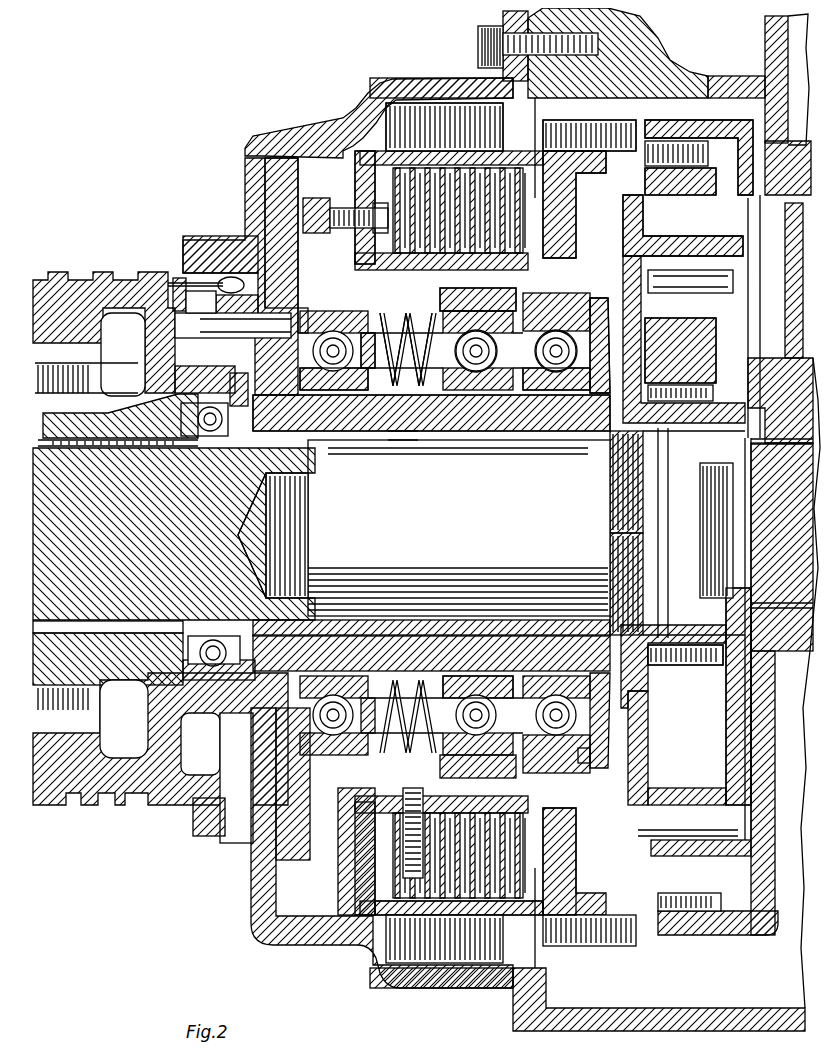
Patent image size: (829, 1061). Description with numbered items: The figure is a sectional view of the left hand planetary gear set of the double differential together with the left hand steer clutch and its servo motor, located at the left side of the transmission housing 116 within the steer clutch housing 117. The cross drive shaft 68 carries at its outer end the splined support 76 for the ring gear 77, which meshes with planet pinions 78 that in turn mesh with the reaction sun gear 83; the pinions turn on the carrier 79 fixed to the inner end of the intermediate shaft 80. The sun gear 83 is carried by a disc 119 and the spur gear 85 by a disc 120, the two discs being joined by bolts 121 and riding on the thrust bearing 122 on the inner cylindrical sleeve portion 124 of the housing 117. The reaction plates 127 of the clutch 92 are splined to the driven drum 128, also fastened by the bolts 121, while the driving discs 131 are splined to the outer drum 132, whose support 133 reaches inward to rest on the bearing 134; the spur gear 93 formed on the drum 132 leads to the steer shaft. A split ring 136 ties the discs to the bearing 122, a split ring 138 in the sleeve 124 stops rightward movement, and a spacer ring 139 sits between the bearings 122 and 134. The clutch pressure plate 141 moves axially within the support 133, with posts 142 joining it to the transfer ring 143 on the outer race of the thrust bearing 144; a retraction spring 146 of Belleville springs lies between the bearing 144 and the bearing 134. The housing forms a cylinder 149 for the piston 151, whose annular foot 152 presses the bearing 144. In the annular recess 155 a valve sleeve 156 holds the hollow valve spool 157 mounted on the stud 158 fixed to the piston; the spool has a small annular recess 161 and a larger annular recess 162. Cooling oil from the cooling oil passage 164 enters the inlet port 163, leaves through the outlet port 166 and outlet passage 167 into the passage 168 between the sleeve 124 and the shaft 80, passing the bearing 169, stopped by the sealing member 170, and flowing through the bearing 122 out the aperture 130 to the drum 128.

The cross drive shaft 68 is at (755, 518).
The support 76 is at (762, 350).
The ring gear 77 is at (665, 113).
The planet pinions 78 is at (703, 162).
The carrier 79 is at (715, 338).
The intermediate shaft 80 is at (512, 580).
The reaction sun gear 83 is at (653, 412).
The spur gear 85 is at (558, 113).
The clutch 92 is at (493, 167).
The spur gear 93 is at (405, 110).
The transmission housing 116 is at (623, 33).
The steer clutch housing 117 is at (312, 123).
The disc 119 is at (620, 682).
The disc 120 is at (568, 192).
The bolts 121 is at (602, 247).
The thrust bearing 122 is at (537, 365).
The inner cylindrical sleeve portion 124 is at (393, 423).
The reaction plates 127 is at (567, 820).
The driven drum 128 is at (482, 783).
The aperture 130 is at (463, 262).
The driving discs 131 is at (572, 833).
The outer drum 132 is at (580, 860).
The support 133 is at (350, 790).
The bearing 134 is at (470, 365).
The split ring 136 is at (573, 747).
The split ring 138 is at (578, 413).
The spacer ring 139 is at (493, 423).
The clutch pressure plate 141 is at (377, 297).
The posts 142 is at (290, 303).
The transfer ring 143 is at (300, 200).
The thrust bearing 144 is at (353, 372).
The retraction spring 146 is at (400, 373).
The cylinder 149 is at (238, 190).
The piston 151 is at (263, 160).
The annular foot 152 is at (333, 365).
The annular recess 155 is at (235, 788).
The valve sleeve 156 is at (153, 268).
The valve spool 157 is at (157, 352).
The stud 158 is at (247, 308).
The annular recess 161 is at (237, 275).
The annular recess 162 is at (163, 278).
The cooling oil inlet port 163 is at (187, 274).
The cooling oil passage 164 is at (223, 272).
The outlet port 166 is at (200, 367).
The outlet passage 167 is at (237, 382).
The passage 168 is at (430, 423).
The bearing 169 is at (197, 423).
The sealing member 170 is at (125, 440).